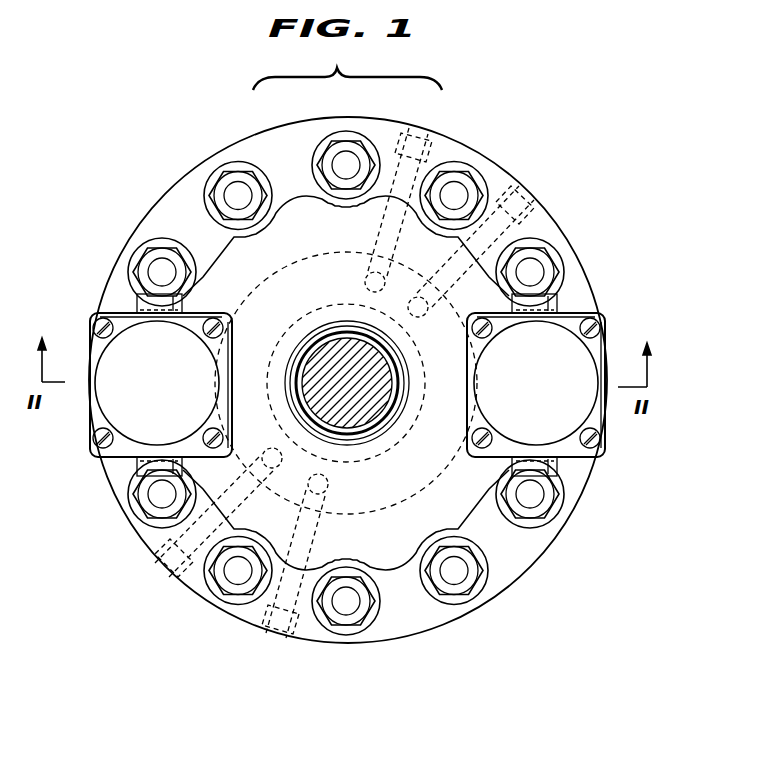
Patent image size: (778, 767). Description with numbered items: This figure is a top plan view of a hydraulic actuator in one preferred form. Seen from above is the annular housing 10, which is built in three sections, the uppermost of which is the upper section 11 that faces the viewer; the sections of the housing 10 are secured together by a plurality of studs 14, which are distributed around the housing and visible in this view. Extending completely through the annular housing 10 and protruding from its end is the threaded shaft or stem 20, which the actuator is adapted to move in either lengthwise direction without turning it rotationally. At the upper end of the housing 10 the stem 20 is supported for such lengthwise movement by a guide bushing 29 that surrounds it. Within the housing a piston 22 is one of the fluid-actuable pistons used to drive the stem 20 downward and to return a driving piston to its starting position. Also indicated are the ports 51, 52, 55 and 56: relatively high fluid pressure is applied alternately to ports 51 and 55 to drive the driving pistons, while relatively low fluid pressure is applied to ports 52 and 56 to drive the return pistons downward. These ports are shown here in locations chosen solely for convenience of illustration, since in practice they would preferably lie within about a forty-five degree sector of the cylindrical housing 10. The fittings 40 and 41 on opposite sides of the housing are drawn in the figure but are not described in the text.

The annular housing 10 is at (347, 64).
The upper section 11 is at (573, 280).
The studs 14 is at (342, 143).
The threaded shaft or stem 20 is at (352, 415).
The piston 22 is at (449, 528).
The guide bushing 29 is at (322, 332).
The port fitting 40 is at (161, 385).
The port fitting 41 is at (536, 385).
The port 51 is at (161, 573).
The port 52 is at (418, 126).
The port 55 is at (273, 643).
The port 56 is at (523, 194).